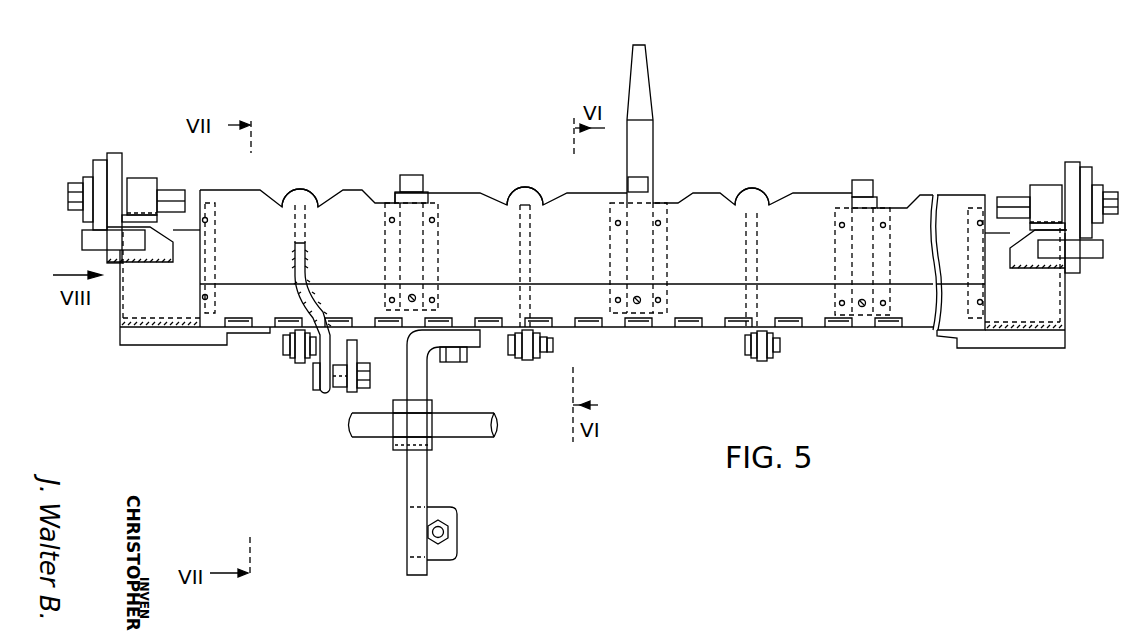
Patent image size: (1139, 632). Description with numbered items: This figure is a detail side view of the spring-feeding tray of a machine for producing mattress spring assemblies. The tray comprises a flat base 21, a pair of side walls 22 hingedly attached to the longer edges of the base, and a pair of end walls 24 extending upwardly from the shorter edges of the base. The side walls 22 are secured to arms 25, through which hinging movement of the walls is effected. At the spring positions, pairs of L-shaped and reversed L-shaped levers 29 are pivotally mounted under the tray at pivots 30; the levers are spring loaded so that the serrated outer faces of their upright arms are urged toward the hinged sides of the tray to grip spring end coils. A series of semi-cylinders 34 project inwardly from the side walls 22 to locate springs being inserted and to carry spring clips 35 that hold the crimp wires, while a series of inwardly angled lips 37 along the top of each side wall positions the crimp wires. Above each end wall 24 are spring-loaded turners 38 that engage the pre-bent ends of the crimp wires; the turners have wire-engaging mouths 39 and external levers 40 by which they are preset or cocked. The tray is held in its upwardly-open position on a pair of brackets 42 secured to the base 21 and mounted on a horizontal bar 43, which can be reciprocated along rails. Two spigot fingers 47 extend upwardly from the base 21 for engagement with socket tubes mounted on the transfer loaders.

The flat base 21 is at (812, 333).
The side walls 22 is at (347, 193).
The end walls 24 is at (118, 305).
The arms 25 is at (303, 256).
The L-shaped and reversed L-shaped levers 29 is at (292, 221).
The pivot 30 is at (318, 350).
The semi-cylinders 34 is at (842, 252).
The spring clips 35 is at (411, 185).
The inwardly angled lips 37 is at (530, 203).
The spring-loaded turners 38 is at (102, 166).
The wire-engaging mouths 39 is at (166, 190).
The external levers 40 is at (86, 185).
The brackets 42 is at (414, 483).
The horizontal bar 43 is at (487, 430).
The spigot fingers 47 is at (638, 117).